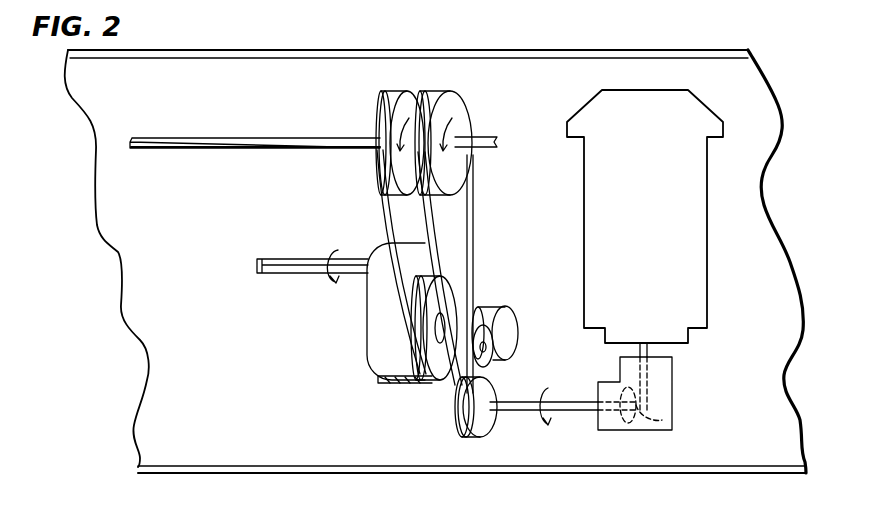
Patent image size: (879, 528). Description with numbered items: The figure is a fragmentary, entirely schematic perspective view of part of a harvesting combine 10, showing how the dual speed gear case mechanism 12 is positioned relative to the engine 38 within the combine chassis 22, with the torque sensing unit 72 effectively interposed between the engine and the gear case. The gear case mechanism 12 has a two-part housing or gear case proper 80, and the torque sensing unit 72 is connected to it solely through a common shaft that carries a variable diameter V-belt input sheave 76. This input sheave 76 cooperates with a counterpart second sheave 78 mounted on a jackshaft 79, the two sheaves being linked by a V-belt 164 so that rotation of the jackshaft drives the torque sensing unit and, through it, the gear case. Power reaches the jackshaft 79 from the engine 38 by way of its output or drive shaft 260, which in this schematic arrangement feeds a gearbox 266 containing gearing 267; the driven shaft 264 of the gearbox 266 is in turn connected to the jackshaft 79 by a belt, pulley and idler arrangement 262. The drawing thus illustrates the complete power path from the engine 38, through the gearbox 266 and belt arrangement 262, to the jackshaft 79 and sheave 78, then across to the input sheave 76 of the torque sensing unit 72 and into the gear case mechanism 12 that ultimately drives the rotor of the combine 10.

The combine 10 is at (178, 301).
The combine chassis 22 is at (151, 251).
The jackshaft 79 is at (237, 138).
The second sheave 78 is at (386, 101).
The drive belt 164 is at (391, 217).
The belt, pulley and idler arrangement 262 is at (474, 183).
The driven shaft of gearbox 264 is at (520, 412).
The dual speed gear case mechanism 12 is at (341, 311).
The gear case housing 80 is at (393, 298).
The variable diameter V-belt sheave 76 is at (405, 381).
The torque sensing unit 72 is at (506, 297).
The engine 38 is at (659, 307).
The engine output shaft 260 is at (650, 352).
The gearbox 266 is at (674, 413).
The bevel gear 267 is at (641, 424).